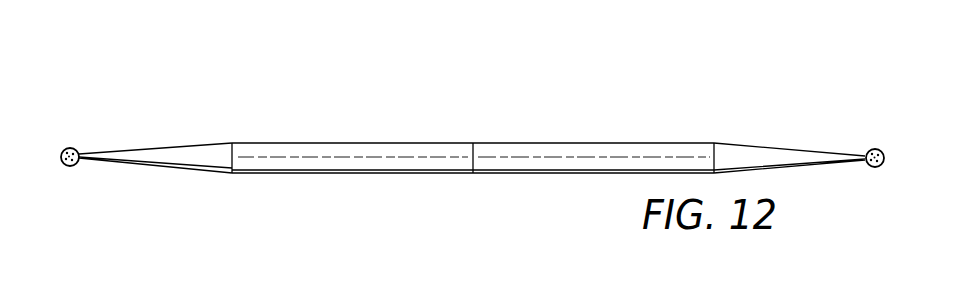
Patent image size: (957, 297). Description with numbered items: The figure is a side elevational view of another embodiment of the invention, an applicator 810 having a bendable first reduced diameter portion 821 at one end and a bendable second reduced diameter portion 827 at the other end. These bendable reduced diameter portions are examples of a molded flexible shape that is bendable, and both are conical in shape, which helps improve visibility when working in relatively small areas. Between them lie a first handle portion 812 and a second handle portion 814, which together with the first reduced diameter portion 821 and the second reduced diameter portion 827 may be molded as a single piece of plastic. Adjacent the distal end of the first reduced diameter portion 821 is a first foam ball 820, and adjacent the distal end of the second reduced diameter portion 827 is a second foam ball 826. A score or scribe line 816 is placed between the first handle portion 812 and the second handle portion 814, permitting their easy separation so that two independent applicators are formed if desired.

The applicator 810 is at (474, 150).
The first handle portion 812 is at (357, 163).
The second handle portion 814 is at (641, 143).
The score or scribe line 816 is at (473, 163).
The first foam ball 820 is at (73, 148).
The first reduced diameter portion 821 is at (157, 170).
The second foam ball 826 is at (878, 148).
The second reduced diameter portion 827 is at (775, 147).